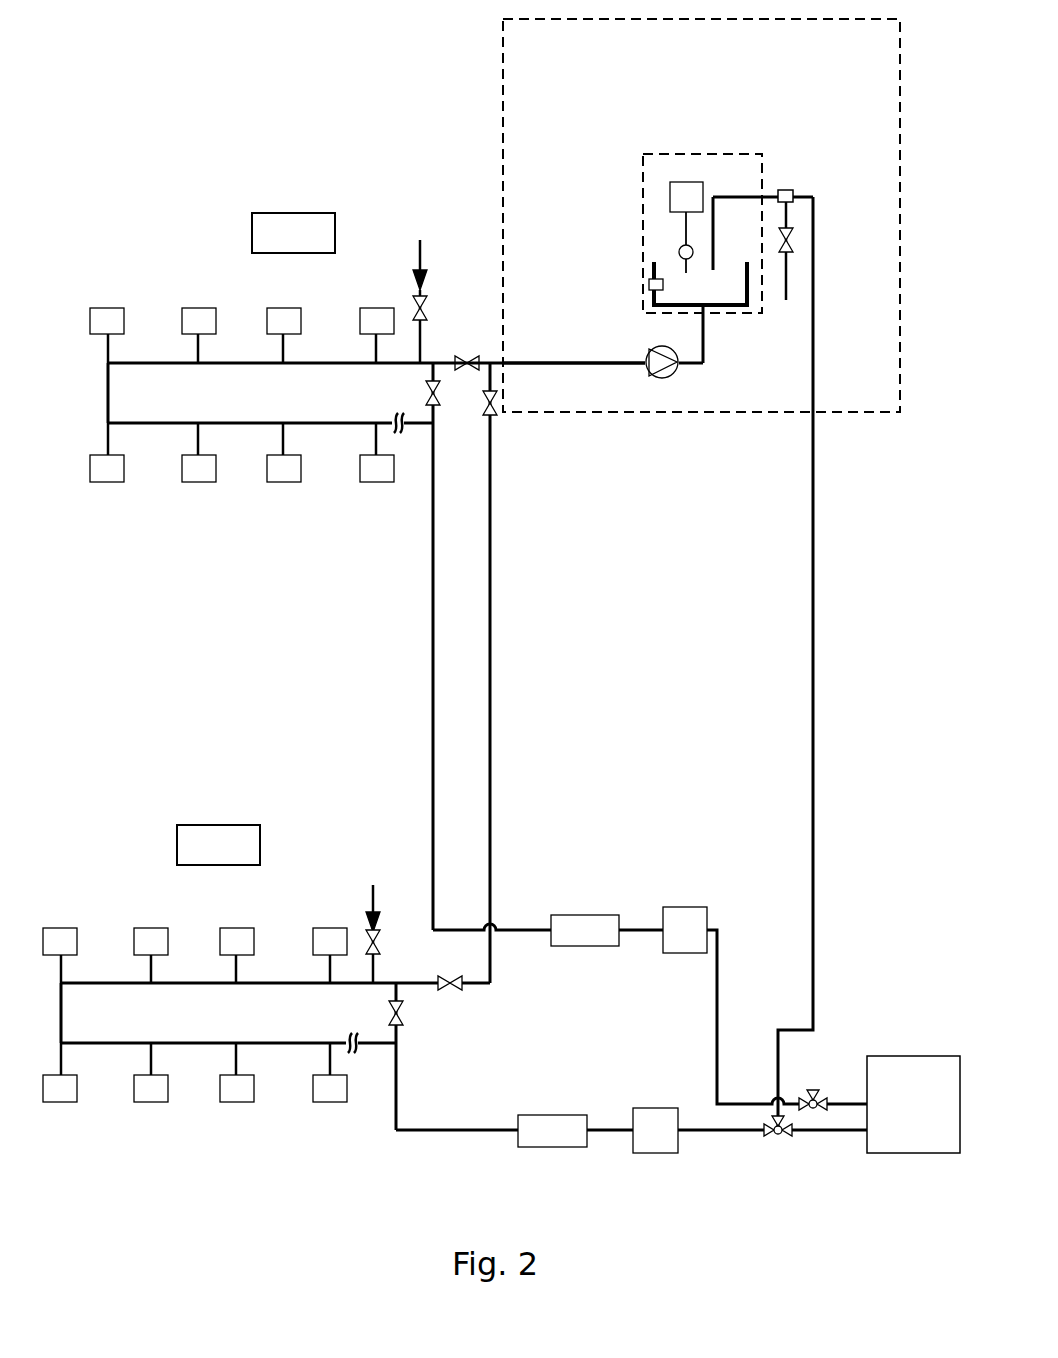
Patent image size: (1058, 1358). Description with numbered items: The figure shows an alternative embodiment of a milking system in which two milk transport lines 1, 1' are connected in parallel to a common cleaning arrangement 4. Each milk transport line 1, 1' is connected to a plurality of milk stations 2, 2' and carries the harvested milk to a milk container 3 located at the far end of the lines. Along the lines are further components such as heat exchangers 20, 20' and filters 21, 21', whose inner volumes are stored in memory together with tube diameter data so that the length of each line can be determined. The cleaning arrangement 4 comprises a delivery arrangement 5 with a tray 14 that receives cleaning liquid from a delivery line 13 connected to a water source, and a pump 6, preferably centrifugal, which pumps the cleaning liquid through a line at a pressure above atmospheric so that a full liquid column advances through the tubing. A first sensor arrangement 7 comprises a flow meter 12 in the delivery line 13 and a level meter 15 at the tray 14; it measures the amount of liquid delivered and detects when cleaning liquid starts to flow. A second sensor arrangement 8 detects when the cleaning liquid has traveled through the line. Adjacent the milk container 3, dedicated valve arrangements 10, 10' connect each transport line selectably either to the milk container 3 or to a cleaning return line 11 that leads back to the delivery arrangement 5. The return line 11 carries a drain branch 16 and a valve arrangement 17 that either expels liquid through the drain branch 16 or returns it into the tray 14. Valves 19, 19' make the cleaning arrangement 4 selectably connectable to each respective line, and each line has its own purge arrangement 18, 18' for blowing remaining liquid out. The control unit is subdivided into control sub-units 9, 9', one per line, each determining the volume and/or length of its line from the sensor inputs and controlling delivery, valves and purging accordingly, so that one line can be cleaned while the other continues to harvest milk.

The milk transport line 1 is at (261, 416).
The milk transport line 1' is at (266, 1033).
The milk stations 2 is at (189, 289).
The milk stations 2' is at (126, 908).
The milk container 3 is at (912, 1153).
The cleaning arrangement 4 is at (498, 70).
The delivery arrangement 5 is at (636, 150).
The pump 6 is at (662, 366).
The first sensor arrangement 7 is at (580, 205).
The second sensor arrangement 8 is at (790, 190).
The control sub-unit 9 is at (258, 210).
The control sub-unit 9' is at (181, 821).
The valve device 10 is at (842, 1063).
The valve arrangement 10' is at (795, 1166).
The cleaning return line 11 is at (818, 485).
The flow meter 12 is at (678, 252).
The delivery line 13 is at (683, 219).
The tray 14 is at (732, 307).
The level meter 15 is at (650, 285).
The drain branch 16 is at (786, 300).
The valve arrangement 17 is at (788, 240).
The purge arrangement 18 is at (394, 301).
The purge arrangement 18' is at (346, 919).
The valve 19 is at (475, 307).
The valve 19' is at (541, 673).
The heat exchanger 20 is at (686, 908).
The heat exchanger 20' is at (655, 1103).
The filter 21 is at (585, 905).
The filter 21' is at (552, 1100).